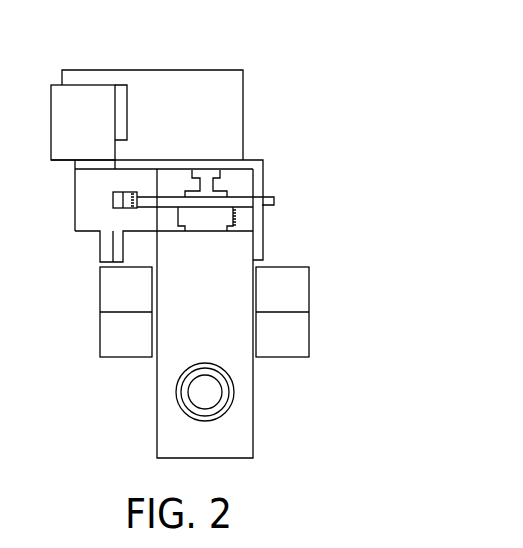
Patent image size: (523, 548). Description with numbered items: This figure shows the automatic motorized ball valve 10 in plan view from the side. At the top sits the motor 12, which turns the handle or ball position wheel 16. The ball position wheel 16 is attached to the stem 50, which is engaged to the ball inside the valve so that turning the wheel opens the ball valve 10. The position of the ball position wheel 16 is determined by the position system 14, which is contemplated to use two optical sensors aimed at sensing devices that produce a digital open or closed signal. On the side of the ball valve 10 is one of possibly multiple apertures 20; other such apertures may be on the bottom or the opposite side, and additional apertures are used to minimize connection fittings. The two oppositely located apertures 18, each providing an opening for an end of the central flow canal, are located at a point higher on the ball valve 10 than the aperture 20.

The ball valve 10 is at (330, 98).
The motor 12 is at (179, 82).
The position system 14 is at (85, 202).
The ball position wheel 16 is at (245, 201).
The aperture 18 is at (102, 335).
The aperture 20 is at (212, 392).
The stem 50 is at (205, 232).